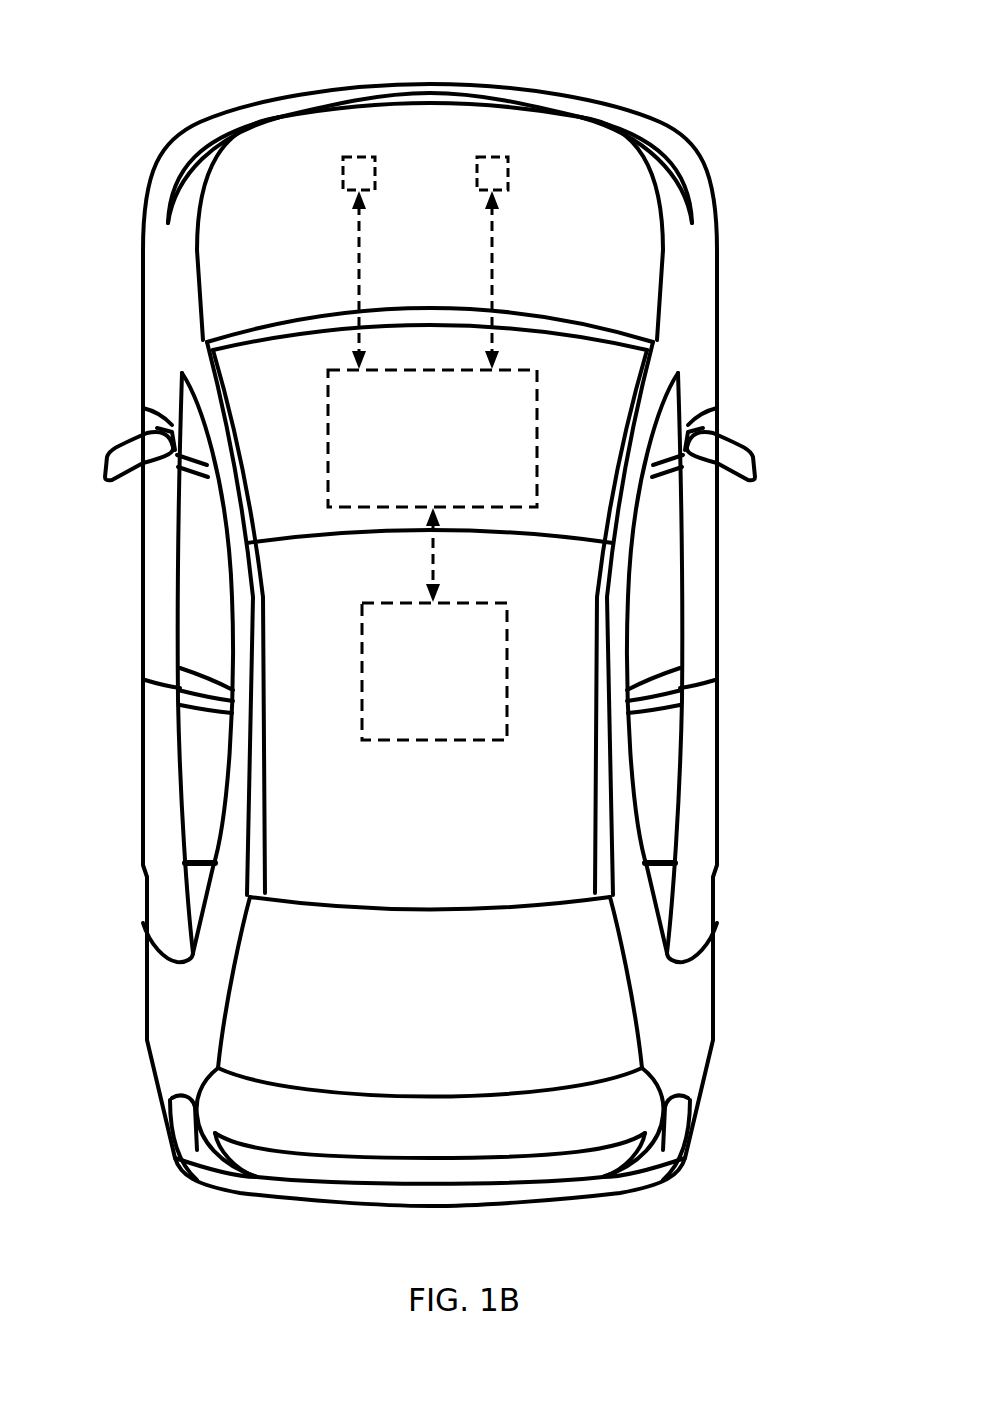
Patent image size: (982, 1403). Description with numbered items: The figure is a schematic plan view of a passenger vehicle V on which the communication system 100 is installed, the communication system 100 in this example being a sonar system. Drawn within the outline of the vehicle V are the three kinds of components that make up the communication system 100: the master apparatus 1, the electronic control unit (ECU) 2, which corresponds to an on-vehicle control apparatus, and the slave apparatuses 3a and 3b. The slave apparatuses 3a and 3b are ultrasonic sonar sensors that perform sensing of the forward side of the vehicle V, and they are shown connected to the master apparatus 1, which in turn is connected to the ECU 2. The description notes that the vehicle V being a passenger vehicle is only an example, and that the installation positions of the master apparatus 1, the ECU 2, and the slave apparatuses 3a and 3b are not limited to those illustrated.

The vehicle V is at (70, 47).
The communication system 100 is at (663, 80).
The master apparatus 1 is at (537, 413).
The electronic control unit (ECU) 2 is at (507, 672).
The slave apparatus 3a is at (357, 156).
The slave apparatus 3b is at (490, 156).